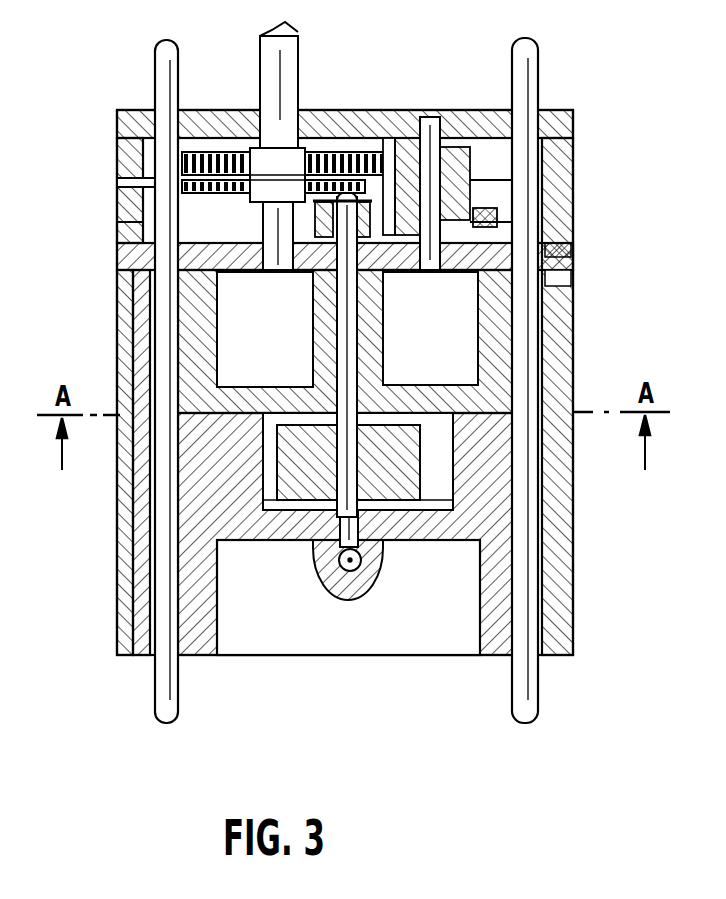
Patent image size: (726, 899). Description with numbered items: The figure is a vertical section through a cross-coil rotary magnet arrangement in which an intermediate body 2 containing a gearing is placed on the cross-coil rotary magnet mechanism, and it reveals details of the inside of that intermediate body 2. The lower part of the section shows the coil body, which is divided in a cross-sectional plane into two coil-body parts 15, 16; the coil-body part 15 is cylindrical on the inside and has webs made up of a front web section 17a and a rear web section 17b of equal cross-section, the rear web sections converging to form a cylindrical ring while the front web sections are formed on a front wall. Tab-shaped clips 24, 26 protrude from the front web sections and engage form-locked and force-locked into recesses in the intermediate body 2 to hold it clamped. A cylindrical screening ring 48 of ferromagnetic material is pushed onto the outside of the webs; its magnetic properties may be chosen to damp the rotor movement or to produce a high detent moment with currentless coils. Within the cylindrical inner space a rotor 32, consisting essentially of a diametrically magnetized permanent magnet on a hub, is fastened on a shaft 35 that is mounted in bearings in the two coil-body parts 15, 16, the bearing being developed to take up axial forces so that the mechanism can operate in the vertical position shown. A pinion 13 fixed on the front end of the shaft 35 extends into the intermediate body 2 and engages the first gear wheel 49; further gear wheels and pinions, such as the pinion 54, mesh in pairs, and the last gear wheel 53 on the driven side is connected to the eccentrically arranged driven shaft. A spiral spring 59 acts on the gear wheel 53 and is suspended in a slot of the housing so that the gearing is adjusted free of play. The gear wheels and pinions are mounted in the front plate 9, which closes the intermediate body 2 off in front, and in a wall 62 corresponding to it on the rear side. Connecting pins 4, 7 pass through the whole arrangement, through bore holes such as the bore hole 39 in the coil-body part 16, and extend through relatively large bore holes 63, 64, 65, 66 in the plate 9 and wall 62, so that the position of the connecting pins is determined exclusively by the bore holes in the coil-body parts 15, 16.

The intermediate body 2 is at (552, 215).
The connecting pin 4 is at (153, 70).
The connecting pin 7 is at (527, 76).
The plate 9 is at (405, 118).
The pinion 13 is at (368, 200).
The coil-body part 15 is at (465, 549).
The coil-body part 16 is at (453, 352).
The front web section 17a is at (133, 308).
The rear web section 17b is at (140, 533).
The tab-shaped clip 24 is at (117, 258).
The tab-shaped clip 26 is at (560, 283).
The rotor 32 is at (282, 507).
The shaft 35 is at (313, 557).
The bore hole 39 is at (357, 587).
The screening ring 48 is at (120, 345).
The gear wheel 49 is at (540, 222).
The gear wheel 53 is at (330, 152).
The pinion 54 is at (550, 183).
The spiral spring 59 is at (117, 183).
The wall 62 is at (462, 272).
The bore hole 63 is at (117, 127).
The bore hole 64 is at (540, 110).
The bore hole 65 is at (117, 222).
The bore hole 66 is at (563, 253).